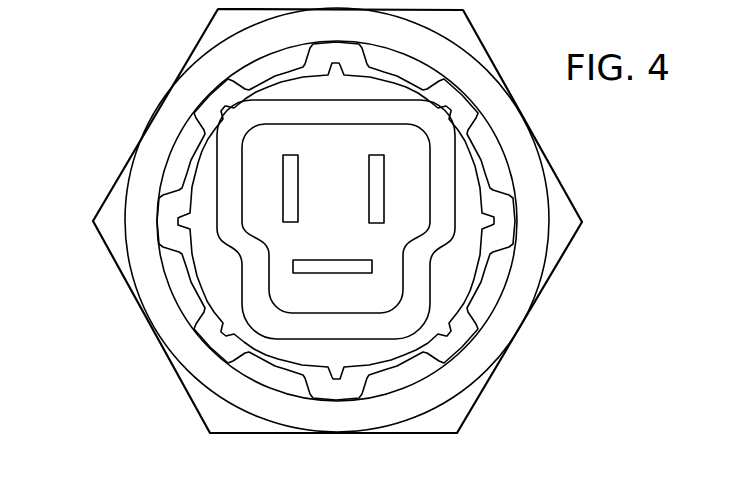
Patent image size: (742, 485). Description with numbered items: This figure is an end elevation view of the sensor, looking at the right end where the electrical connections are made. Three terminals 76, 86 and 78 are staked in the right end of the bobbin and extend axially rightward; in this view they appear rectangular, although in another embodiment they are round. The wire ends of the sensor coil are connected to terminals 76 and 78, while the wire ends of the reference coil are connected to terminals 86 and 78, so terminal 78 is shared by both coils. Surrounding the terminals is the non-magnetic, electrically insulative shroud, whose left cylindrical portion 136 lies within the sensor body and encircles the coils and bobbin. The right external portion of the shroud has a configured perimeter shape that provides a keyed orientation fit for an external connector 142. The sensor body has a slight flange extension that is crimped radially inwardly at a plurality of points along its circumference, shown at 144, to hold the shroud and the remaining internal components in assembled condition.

The terminal 76 is at (298, 181).
The terminal 86 is at (375, 168).
The terminal 78 is at (355, 273).
The external connector 142 is at (417, 270).
The left cylindrical portion of shroud 136 is at (405, 336).
The crimped points 144 is at (446, 113).